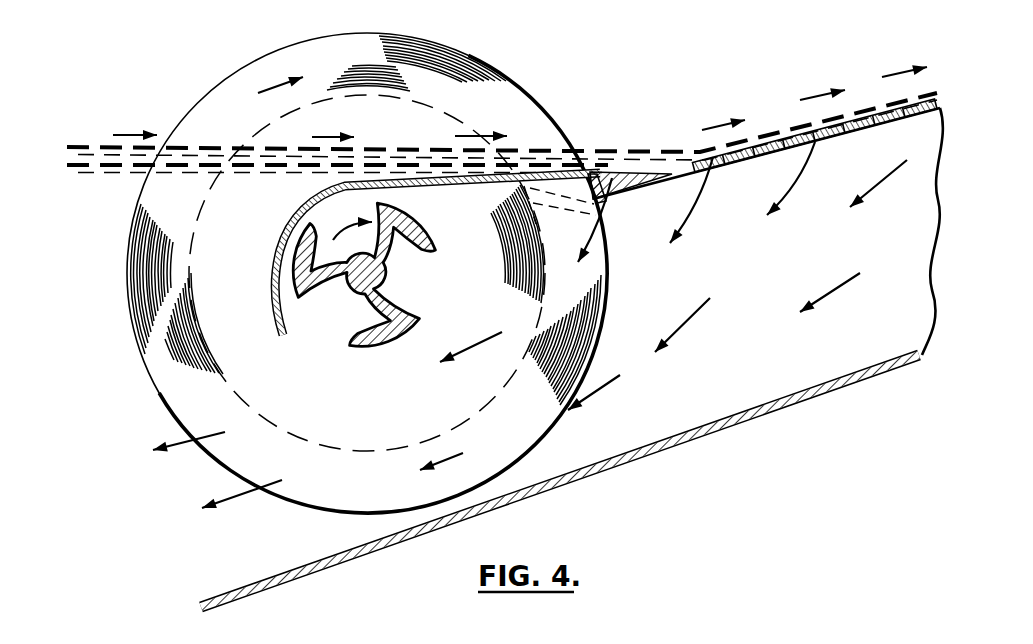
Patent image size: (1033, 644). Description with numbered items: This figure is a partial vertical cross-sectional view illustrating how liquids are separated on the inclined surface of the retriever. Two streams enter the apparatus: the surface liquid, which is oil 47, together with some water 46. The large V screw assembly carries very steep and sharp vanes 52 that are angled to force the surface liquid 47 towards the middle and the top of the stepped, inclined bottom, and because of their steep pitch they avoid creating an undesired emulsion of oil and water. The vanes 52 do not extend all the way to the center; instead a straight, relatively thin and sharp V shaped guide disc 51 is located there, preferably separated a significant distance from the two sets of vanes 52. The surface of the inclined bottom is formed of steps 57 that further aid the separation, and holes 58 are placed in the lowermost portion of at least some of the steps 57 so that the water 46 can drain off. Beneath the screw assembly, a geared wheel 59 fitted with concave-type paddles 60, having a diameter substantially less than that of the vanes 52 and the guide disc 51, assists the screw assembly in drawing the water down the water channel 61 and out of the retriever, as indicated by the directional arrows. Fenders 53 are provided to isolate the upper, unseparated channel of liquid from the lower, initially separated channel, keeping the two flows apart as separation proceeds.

The water 46 is at (130, 170).
The oil 47 is at (88, 148).
The V shaped guide disc 51 is at (516, 102).
The vanes 52 is at (442, 120).
The fenders 53 is at (282, 237).
The steps 57 is at (790, 130).
The holes 58 is at (707, 172).
The geared wheel 59 is at (363, 285).
The concave-type paddles 60 is at (397, 262).
The water channel 61 is at (748, 276).